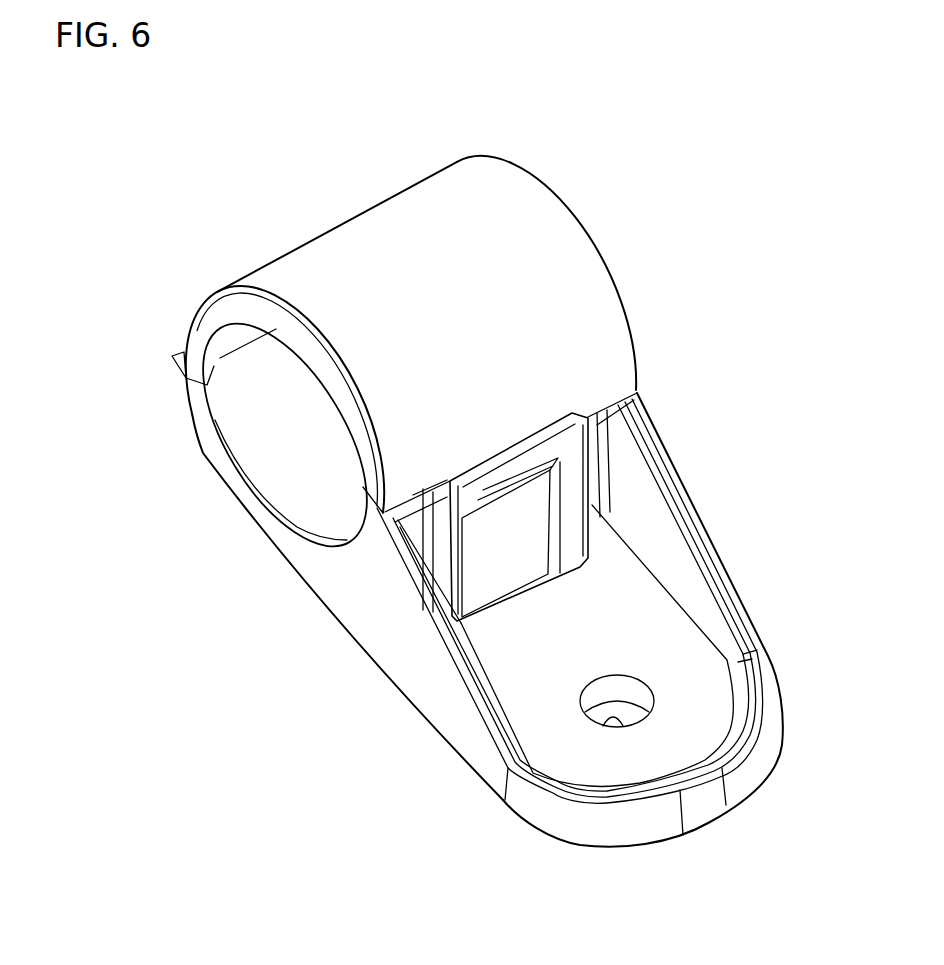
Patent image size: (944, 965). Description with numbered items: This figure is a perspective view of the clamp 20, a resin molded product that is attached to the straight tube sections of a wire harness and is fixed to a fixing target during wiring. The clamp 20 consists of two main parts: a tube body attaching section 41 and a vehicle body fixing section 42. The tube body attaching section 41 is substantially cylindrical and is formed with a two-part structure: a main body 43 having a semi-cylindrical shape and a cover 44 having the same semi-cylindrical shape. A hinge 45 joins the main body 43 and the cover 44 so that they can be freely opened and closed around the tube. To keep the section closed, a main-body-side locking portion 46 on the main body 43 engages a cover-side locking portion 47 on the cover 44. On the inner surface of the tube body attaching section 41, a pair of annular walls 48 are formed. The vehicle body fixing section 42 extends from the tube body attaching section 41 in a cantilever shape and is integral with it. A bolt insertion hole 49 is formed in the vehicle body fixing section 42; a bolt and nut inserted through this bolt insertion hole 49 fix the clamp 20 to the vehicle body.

The clamp 20 is at (685, 224).
The tube body attaching section 41 is at (340, 237).
The vehicle body fixing section 42 is at (718, 717).
The main body 43 is at (207, 451).
The cover 44 is at (533, 214).
The hinge 45 is at (181, 352).
The main-body-side locking portion 46 is at (500, 503).
The cover-side locking portion 47 is at (568, 447).
The annular walls 48 is at (608, 298).
The bolt insertion hole 49 is at (616, 718).